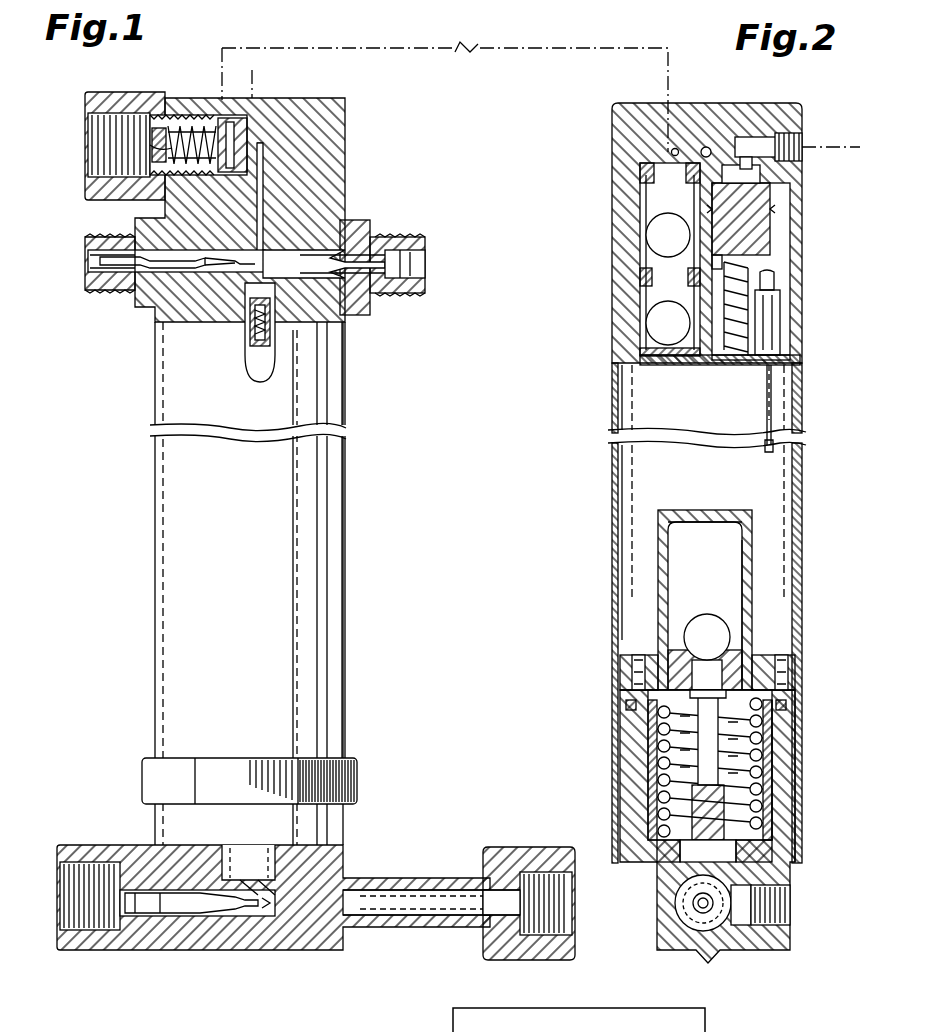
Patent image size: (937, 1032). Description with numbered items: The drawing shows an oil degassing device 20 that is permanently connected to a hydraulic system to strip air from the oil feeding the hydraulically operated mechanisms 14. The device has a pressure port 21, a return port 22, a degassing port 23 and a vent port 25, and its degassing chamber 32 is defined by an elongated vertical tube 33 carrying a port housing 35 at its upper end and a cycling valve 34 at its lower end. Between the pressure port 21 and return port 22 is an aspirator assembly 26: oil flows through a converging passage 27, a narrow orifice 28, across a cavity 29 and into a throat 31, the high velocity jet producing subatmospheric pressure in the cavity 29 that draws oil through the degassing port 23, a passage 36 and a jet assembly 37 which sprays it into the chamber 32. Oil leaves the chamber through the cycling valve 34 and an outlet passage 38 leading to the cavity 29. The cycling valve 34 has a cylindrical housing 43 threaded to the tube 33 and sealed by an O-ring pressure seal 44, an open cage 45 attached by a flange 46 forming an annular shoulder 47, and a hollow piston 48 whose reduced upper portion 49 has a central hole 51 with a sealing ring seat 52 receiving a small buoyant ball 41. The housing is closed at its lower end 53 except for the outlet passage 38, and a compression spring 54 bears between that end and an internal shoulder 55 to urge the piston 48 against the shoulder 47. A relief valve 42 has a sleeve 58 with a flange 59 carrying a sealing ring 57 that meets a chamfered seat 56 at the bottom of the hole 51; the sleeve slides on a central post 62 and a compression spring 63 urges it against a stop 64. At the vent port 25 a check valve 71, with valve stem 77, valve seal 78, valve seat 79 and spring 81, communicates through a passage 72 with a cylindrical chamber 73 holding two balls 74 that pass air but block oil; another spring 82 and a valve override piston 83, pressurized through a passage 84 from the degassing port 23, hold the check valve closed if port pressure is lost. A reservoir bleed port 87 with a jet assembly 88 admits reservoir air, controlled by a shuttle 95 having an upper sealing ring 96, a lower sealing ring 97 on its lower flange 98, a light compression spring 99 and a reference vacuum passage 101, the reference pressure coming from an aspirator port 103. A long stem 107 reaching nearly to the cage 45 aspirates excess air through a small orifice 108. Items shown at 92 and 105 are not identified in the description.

In FIG. 2, the hydraulically operated mechanisms 14 is at (706, 1028).
In FIG. 1, the degassing device 20 is at (356, 513).
In FIG. 2, the degassing device 20 is at (818, 502).
In FIG. 1, the pressure port 21 is at (60, 890).
In FIG. 1, the return port 22 is at (572, 935).
In FIG. 1, the degassing port 23 is at (425, 257).
In FIG. 1, the vent port 25 is at (88, 126).
In FIG. 1, the aspirator assembly 26 is at (252, 958).
In FIG. 1, the passage 27 is at (245, 905).
In FIG. 1, the orifice 28 is at (268, 912).
In FIG. 1, the cavity 29 is at (300, 868).
In FIG. 1, the throat 31 is at (315, 895).
In FIG. 2, the degassing chamber 32 is at (628, 388).
In FIG. 1, the tube 33 is at (343, 458).
In FIG. 2, the tube 33 is at (612, 453).
In FIG. 2, the cycling valve 34 is at (605, 733).
In FIG. 2, the port housing 35 is at (612, 128).
In FIG. 1, the passage 36 is at (245, 300).
In FIG. 1, the jet assembly 37 is at (258, 322).
In FIG. 2, the outlet passage 38 is at (738, 872).
In FIG. 2, the buoyant ball 41 is at (725, 618).
In FIG. 2, the relief valve 42 is at (780, 706).
In FIG. 2, the housing 43 is at (800, 835).
In FIG. 2, the O-ring pressure seal 44 is at (790, 700).
In FIG. 2, the cage 45 is at (760, 520).
In FIG. 2, the flange 46 is at (748, 672).
In FIG. 2, the annular shoulder 47 is at (636, 690).
In FIG. 2, the piston 48 is at (772, 770).
In FIG. 2, the upper portion 49 is at (668, 665).
In FIG. 2, the central hole 51 is at (703, 650).
In FIG. 2, the seat 52 is at (672, 650).
In FIG. 2, the lower end 53 is at (772, 852).
In FIG. 2, the compression spring 54 is at (660, 765).
In FIG. 2, the internal shoulder 55 is at (792, 692).
In FIG. 2, the seat 56 is at (708, 655).
In FIG. 2, the sealing ring 57 is at (626, 706).
In FIG. 2, the sleeve 58 is at (760, 745).
In FIG. 2, the flange 59 is at (665, 735).
In FIG. 2, the central post 62 is at (703, 892).
In FIG. 2, the compression spring 63 is at (700, 815).
In FIG. 2, the stop 64 is at (790, 672).
In FIG. 1, the check valve 71 is at (178, 125).
In FIG. 1, the passage 72 is at (368, 48).
In FIG. 2, the cylindrical chamber 73 is at (645, 300).
In FIG. 2, the balls 74 is at (660, 232).
In FIG. 1, the valve stem 77 is at (228, 118).
In FIG. 1, the valve seal 78 is at (163, 112).
In FIG. 1, the valve seat 79 is at (140, 190).
In FIG. 1, the spring 81 is at (170, 152).
In FIG. 1, the spring 82 is at (172, 112).
In FIG. 1, the valve override piston 83 is at (228, 178).
In FIG. 1, the passage 84 is at (262, 170).
In FIG. 1, the reservoir bleed port 87 is at (92, 258).
In FIG. 1, the jet assembly 88 is at (120, 280).
In FIG. 2, the rod 92 is at (745, 375).
In FIG. 2, the shuttle 95 is at (775, 230).
In FIG. 2, the upper sealing ring 96 is at (800, 208).
In FIG. 2, the lower sealing ring 97 is at (688, 370).
In FIG. 2, the lower flange 98 is at (712, 372).
In FIG. 2, the light compression spring 99 is at (732, 372).
In FIG. 2, the passage 101 is at (788, 130).
In FIG. 2, the aspirator port 103 is at (792, 905).
In FIG. 2, the seal 105 is at (790, 255).
In FIG. 2, the stem 107 is at (772, 395).
In FIG. 2, the orifice 108 is at (772, 318).